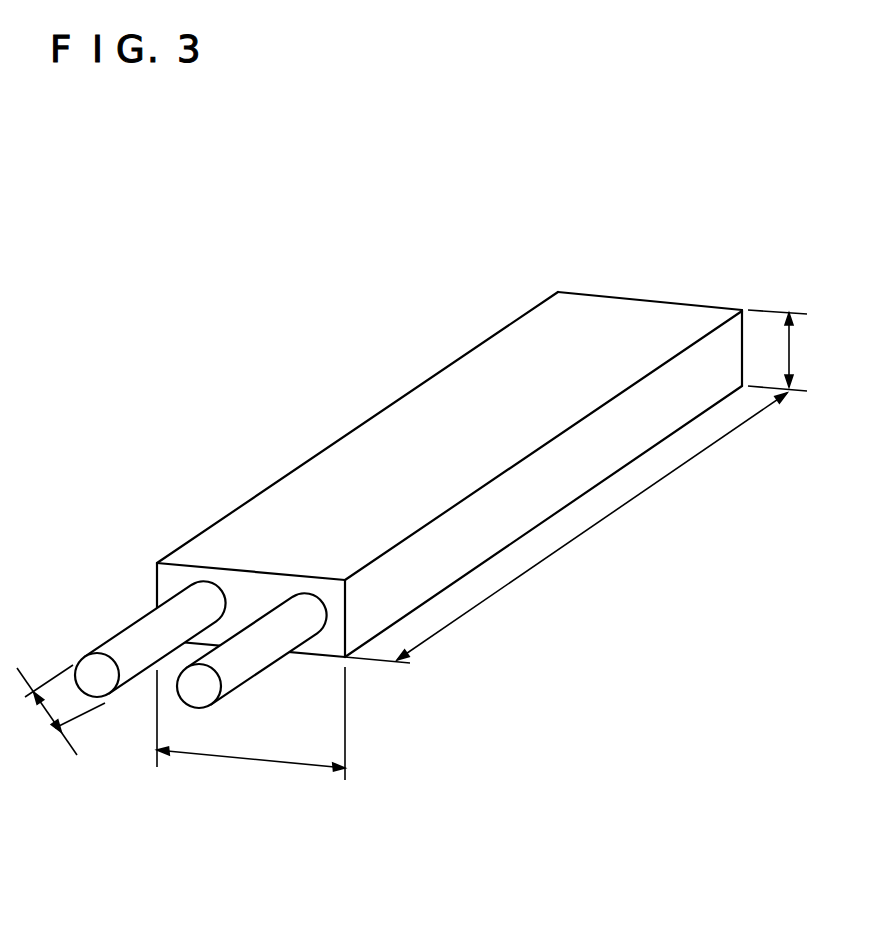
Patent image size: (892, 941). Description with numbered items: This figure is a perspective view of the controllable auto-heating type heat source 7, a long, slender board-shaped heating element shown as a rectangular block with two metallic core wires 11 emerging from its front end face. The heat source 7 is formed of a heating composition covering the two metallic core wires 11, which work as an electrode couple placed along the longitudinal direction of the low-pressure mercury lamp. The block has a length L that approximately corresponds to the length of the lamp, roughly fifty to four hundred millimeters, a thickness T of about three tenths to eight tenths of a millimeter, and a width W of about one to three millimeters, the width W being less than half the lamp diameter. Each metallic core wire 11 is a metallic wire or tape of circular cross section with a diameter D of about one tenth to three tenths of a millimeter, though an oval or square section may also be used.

The controllable auto-heating type heat source 7 is at (390, 437).
The metallic core wires 11 is at (128, 648).
The thickness T is at (784, 350).
The length L is at (566, 528).
The width W is at (251, 734).
The diameter D is at (61, 710).